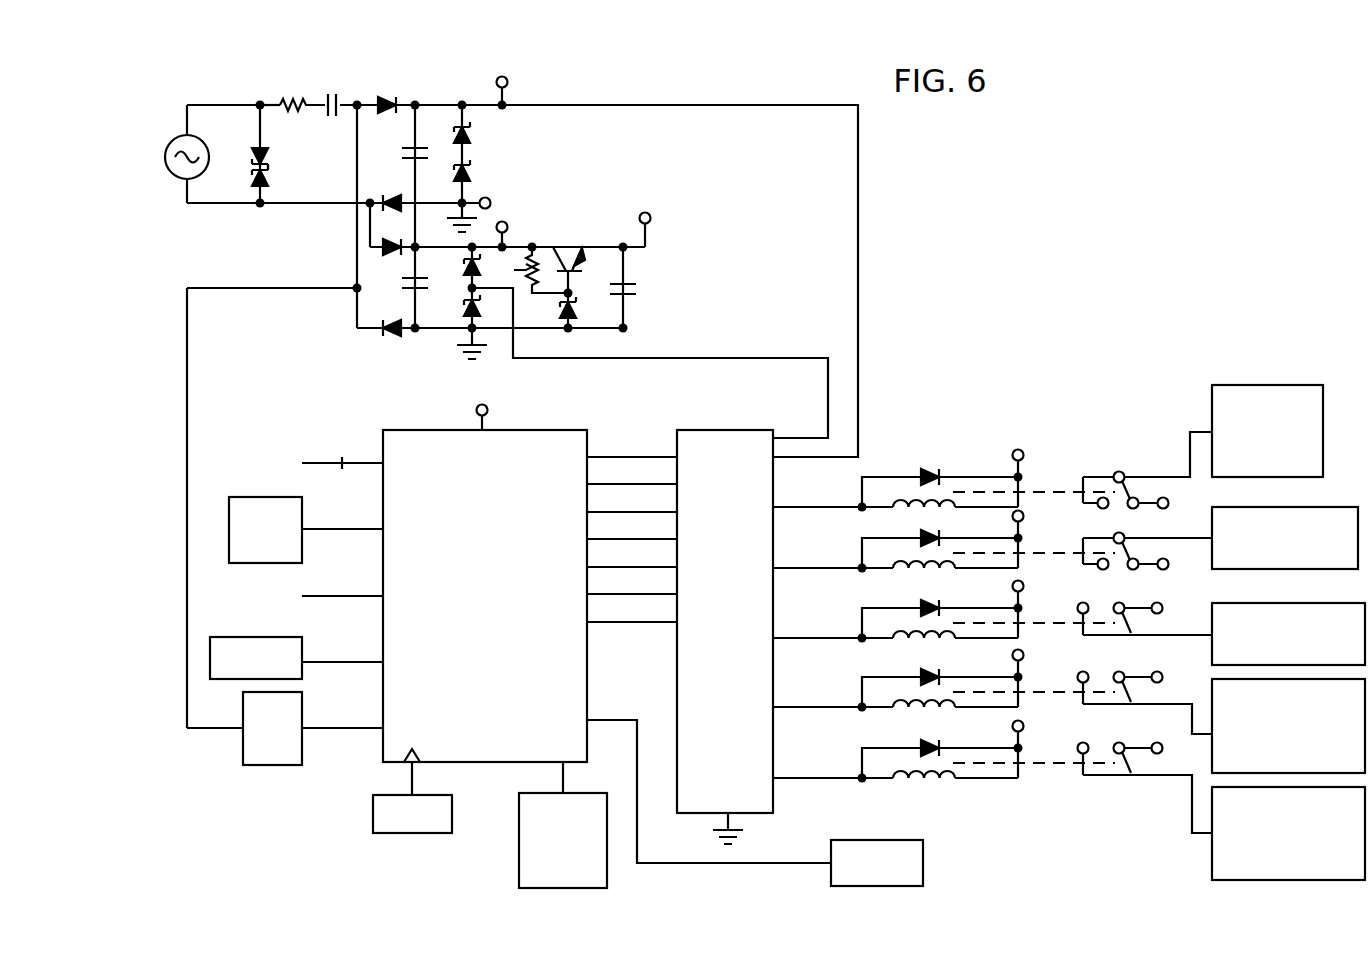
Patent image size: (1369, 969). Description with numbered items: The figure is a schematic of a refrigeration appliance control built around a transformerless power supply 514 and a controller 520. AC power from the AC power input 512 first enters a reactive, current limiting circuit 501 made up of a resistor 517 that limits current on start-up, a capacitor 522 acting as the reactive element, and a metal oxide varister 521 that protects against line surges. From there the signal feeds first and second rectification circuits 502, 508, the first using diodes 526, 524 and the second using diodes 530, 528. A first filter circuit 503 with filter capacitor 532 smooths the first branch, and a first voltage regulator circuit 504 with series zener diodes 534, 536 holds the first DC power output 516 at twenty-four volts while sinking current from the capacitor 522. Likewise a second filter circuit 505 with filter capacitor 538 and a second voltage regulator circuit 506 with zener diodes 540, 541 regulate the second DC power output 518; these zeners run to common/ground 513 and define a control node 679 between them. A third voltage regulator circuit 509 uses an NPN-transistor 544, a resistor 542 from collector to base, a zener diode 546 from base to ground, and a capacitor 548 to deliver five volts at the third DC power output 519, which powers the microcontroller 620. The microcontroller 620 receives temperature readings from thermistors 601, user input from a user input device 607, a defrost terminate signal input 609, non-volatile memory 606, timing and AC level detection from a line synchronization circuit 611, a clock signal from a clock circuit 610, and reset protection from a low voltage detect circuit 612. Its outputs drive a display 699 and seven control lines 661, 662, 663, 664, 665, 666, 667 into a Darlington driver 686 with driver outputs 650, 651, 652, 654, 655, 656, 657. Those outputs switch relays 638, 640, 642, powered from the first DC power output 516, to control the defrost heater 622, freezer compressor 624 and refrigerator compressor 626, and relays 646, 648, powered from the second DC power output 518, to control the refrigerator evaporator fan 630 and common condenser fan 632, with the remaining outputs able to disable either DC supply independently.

The reactive, current limiting circuit 501 is at (312, 95).
The first rectification circuit 502 is at (384, 96).
The first filter circuit 503 is at (414, 97).
The first voltage regulator circuit 504 is at (466, 98).
The second filter circuit 505 is at (452, 380).
The second voltage regulator circuit 506 is at (498, 350).
The second rectification circuit 508 is at (390, 374).
The third voltage regulator circuit 509 is at (606, 223).
The AC power input 512 is at (172, 180).
The common/ground 513 is at (490, 200).
The power supply 514 is at (888, 210).
The first DC power output 516 is at (508, 83).
The resistor 517 is at (290, 108).
The second DC power output 518 is at (508, 228).
The third DC power output 519 is at (652, 218).
The controller 520 is at (300, 430).
The metal oxide varister 521 is at (270, 160).
The capacitor 522 is at (338, 118).
The diode 524 is at (380, 206).
The diode 526 is at (386, 118).
The diode 528 is at (392, 337).
The diode 530 is at (395, 247).
The filter capacitor 532 is at (416, 210).
The zener diode 534 is at (470, 133).
The zener diode 536 is at (470, 172).
The filter capacitor 538 is at (405, 287).
The zener diode 540 is at (466, 267).
The zener diode 541 is at (483, 311).
The resistor 542 is at (536, 256).
The NPN-transistor 544 is at (566, 266).
The zener diode 546 is at (575, 330).
The capacitor 548 is at (630, 289).
The thermistor 601 is at (288, 453).
The memory 606 is at (210, 650).
The user input device 607 is at (229, 525).
The defrost terminate signal input 609 is at (320, 596).
The clock circuit 610 is at (373, 813).
The line synchronization circuit 611 is at (272, 765).
The low voltage detect circuit 612 is at (519, 840).
The microcontroller 620 is at (462, 553).
The defrost heater 622 is at (1268, 385).
The freezer compressor 624 is at (1325, 507).
The refrigerator compressor 626 is at (1312, 603).
The refrigerator evaporator fan 630 is at (1212, 715).
The common condenser fan 632 is at (1212, 855).
The relay 638 is at (1043, 478).
The relay 640 is at (1043, 548).
The relay 642 is at (1043, 618).
The relay 646 is at (1043, 687).
The relay 648 is at (480, 427).
The driver output 650 is at (795, 510).
The driver output 651 is at (795, 571).
The driver output 652 is at (795, 641).
The driver output 654 is at (795, 710).
The driver output 655 is at (795, 781).
The driver output 656 is at (785, 458).
The driver output 657 is at (805, 437).
The control line 661 is at (627, 457).
The control line 662 is at (627, 484).
The control line 663 is at (627, 512).
The control line 664 is at (627, 539).
The control line 665 is at (627, 567).
The control line 666 is at (627, 594).
The control line 667 is at (627, 622).
The control node 679 is at (477, 281).
The Darlington driver 686 is at (742, 437).
The display 699 is at (948, 838).